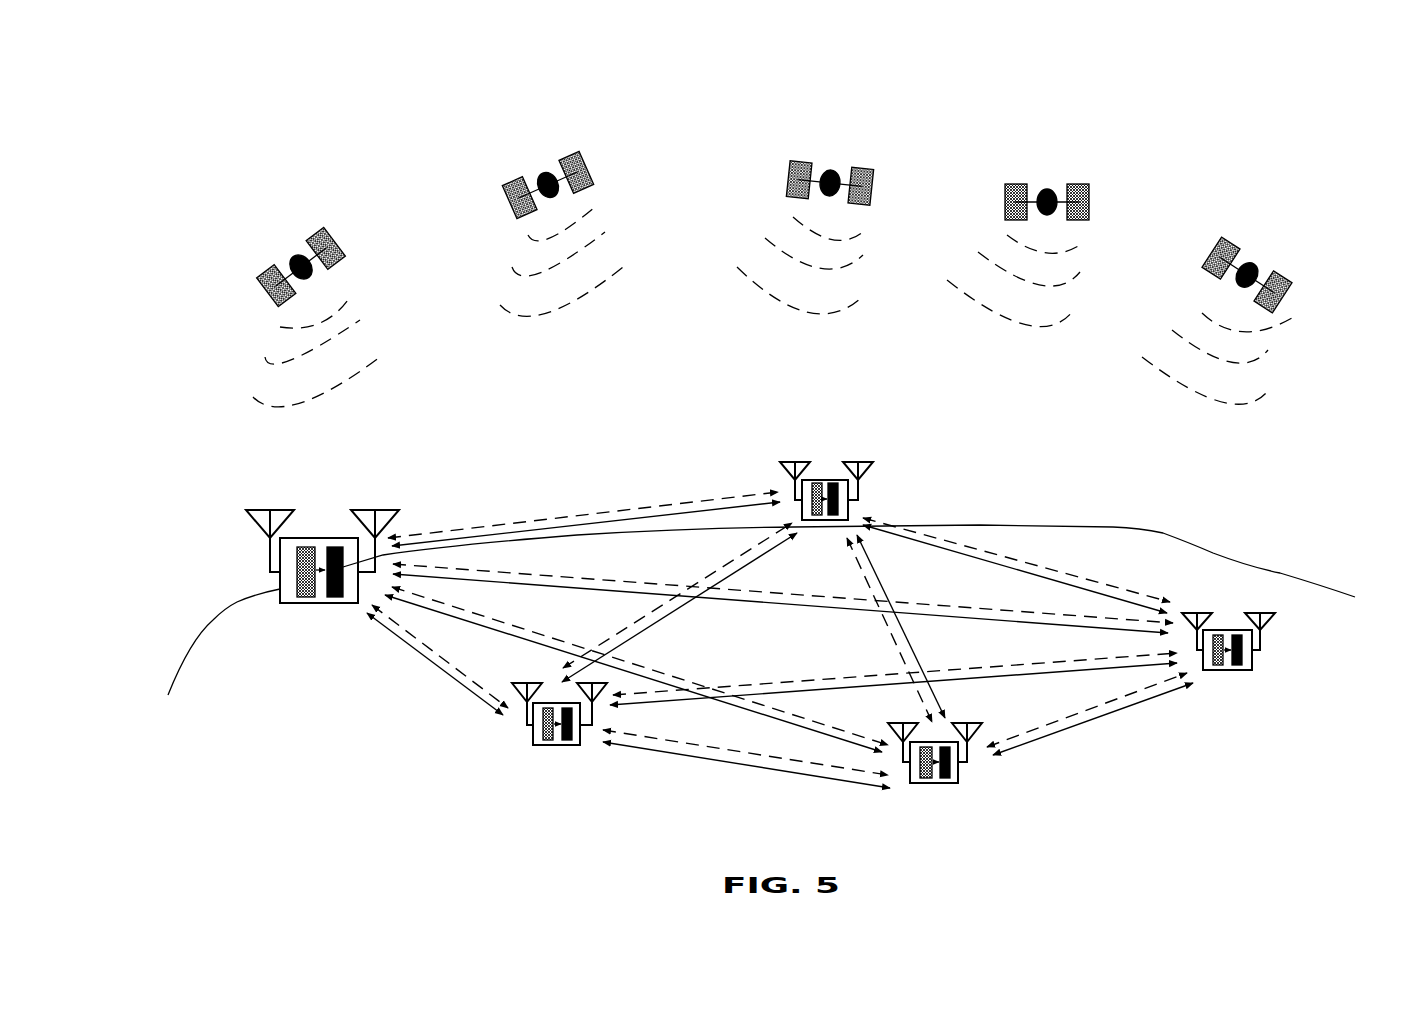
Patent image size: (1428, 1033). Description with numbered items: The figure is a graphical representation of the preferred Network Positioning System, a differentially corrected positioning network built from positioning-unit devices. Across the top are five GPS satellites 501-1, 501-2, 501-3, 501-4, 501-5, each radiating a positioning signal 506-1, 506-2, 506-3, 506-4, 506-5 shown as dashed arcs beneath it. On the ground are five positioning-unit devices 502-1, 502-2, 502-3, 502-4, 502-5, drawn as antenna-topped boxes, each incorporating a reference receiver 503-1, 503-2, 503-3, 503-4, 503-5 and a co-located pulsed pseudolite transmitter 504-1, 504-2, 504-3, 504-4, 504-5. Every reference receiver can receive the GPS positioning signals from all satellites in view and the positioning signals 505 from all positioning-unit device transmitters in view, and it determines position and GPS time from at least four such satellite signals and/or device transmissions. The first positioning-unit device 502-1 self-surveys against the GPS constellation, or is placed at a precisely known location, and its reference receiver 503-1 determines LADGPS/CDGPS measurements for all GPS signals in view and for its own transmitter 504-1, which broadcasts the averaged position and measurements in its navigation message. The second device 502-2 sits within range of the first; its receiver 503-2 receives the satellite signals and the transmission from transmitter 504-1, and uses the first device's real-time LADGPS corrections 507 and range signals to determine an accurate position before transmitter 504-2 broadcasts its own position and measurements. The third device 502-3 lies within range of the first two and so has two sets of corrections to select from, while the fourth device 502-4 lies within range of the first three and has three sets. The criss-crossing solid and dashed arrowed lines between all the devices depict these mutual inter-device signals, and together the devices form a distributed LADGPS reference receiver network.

The GPS satellite 501-1 is at (302, 235).
The GPS satellite 501-2 is at (555, 152).
The GPS satellite 501-3 is at (825, 147).
The GPS satellite 501-4 is at (1058, 172).
The GPS satellite 501-5 is at (1260, 260).
The first positioning-unit device 502-1 is at (338, 546).
The second positioning-unit device 502-2 is at (480, 741).
The third positioning-unit device 502-3 is at (877, 469).
The fourth positioning-unit device 502-4 is at (971, 781).
The fifth positioning-unit device 502-5 is at (1270, 675).
The reference receiver 503-1 is at (302, 595).
The reference receiver 503-2 is at (540, 743).
The reference receiver 503-3 is at (817, 483).
The reference receiver 503-4 is at (923, 777).
The reference receiver 503-5 is at (1217, 663).
The co-located pulsed pseudolite transmitter 504-1 is at (333, 598).
The co-located pulsed pseudolite transmitter 504-2 is at (565, 744).
The co-located pulsed pseudolite transmitter 504-3 is at (835, 483).
The co-located pulsed pseudolite transmitter 504-4 is at (942, 781).
The co-located pulsed pseudolite transmitter 504-5 is at (1237, 668).
The positioning signals from positioning-unit device transmitters 505 is at (683, 493).
The GPS satellite positioning signal 506-1 is at (383, 363).
The GPS satellite positioning signal 506-2 is at (608, 310).
The GPS satellite positioning signal 506-3 is at (862, 307).
The GPS satellite positioning signal 506-4 is at (1035, 335).
The GPS satellite positioning signal 506-5 is at (1248, 405).
The real-time LADGPS corrections 507 is at (427, 665).